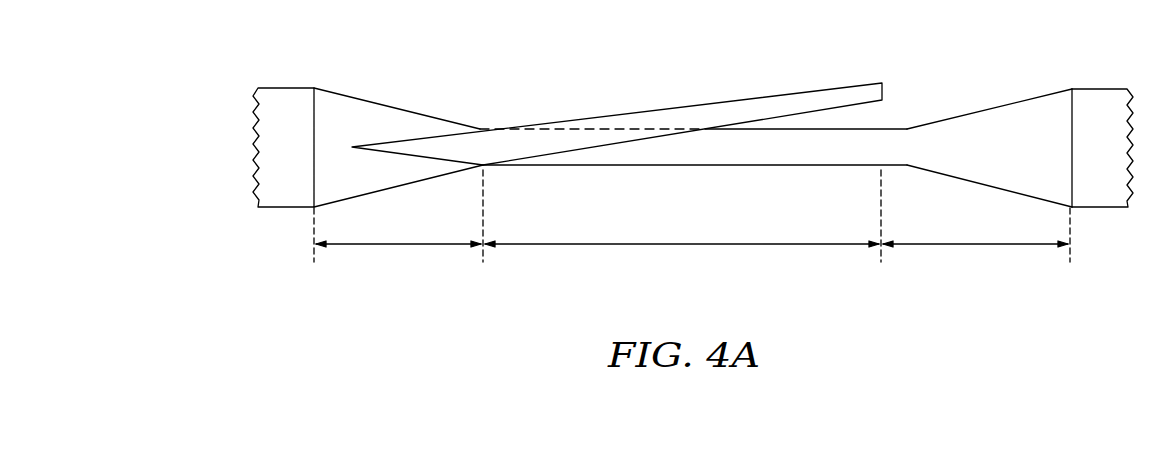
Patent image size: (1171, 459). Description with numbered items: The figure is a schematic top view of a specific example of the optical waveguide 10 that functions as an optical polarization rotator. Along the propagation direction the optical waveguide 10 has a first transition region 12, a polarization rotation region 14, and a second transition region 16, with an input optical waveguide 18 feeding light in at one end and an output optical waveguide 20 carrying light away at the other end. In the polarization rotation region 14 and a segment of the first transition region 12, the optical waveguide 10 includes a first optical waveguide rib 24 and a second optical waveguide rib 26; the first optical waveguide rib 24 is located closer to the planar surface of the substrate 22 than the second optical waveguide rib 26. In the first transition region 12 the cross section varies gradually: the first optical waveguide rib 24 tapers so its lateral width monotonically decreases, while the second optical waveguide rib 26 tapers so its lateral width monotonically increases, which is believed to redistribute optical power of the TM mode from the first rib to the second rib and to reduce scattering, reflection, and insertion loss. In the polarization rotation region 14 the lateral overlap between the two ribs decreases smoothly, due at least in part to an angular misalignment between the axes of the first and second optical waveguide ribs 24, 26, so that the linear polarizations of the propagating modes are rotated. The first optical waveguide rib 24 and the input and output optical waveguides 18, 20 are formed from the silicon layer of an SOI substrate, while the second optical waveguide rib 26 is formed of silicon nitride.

The optical waveguide 10 is at (693, 115).
The first transition region 12 is at (396, 246).
The polarization rotation region 14 is at (678, 246).
The second transition region 16 is at (972, 246).
The input optical waveguide 18 is at (289, 96).
The output optical waveguide 20 is at (1103, 96).
The substrate 22 is at (931, 57).
The first optical waveguide rib 24 is at (806, 166).
The second optical waveguide rib 26 is at (783, 98).